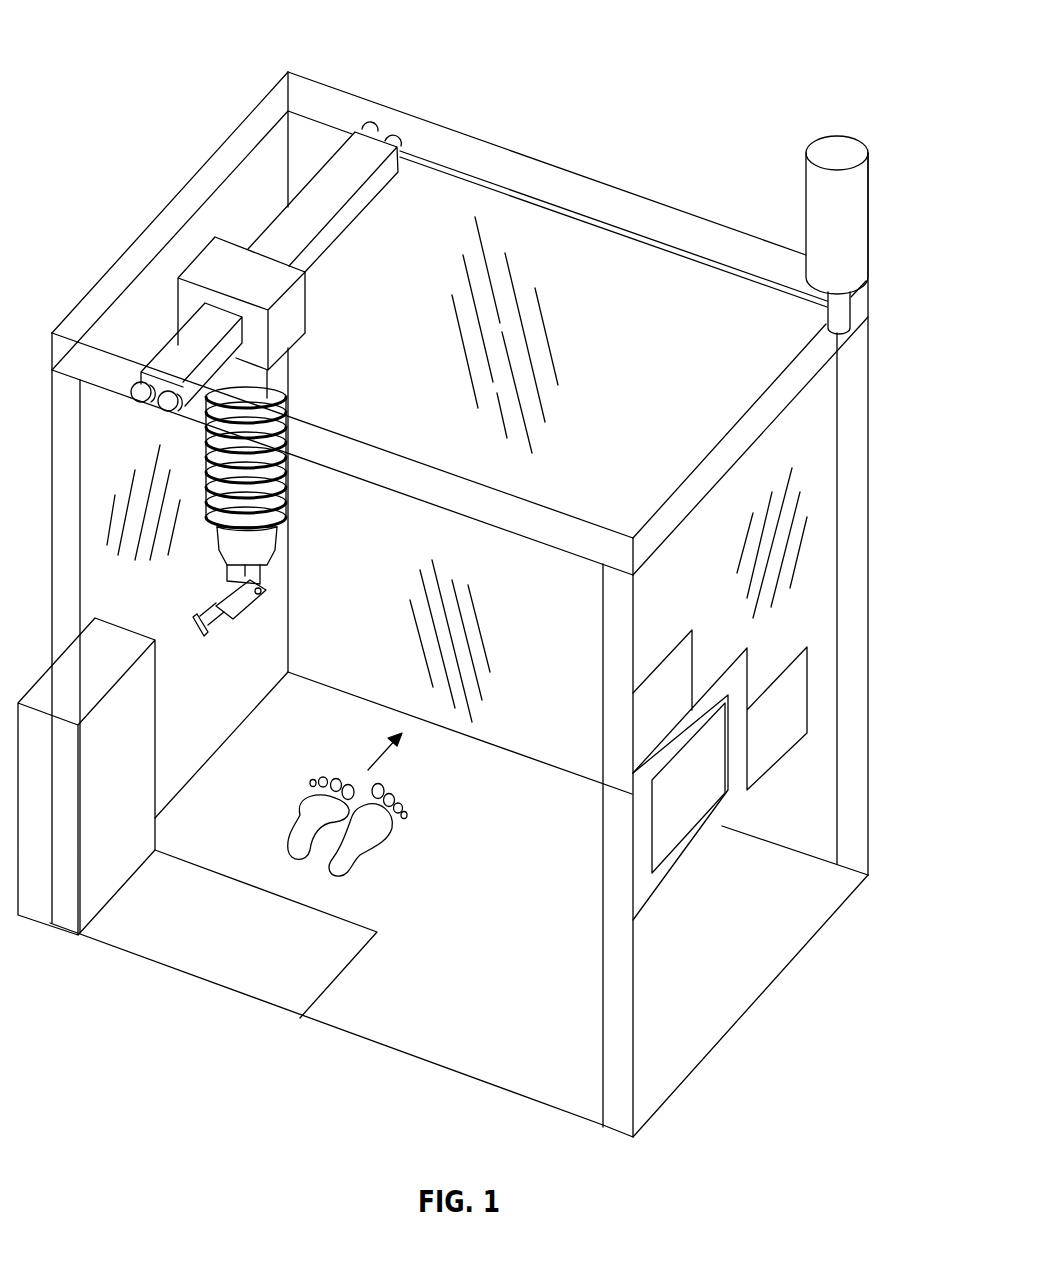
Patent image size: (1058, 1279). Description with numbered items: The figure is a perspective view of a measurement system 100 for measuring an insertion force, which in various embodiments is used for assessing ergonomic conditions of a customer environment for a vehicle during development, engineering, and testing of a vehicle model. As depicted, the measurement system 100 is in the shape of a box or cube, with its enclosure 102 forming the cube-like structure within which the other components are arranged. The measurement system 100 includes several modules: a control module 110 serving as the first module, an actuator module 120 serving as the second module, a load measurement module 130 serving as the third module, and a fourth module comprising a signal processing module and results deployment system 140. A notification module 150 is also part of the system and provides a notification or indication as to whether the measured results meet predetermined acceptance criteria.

The measurement system 100 is at (126, 47).
The enclosure 102 is at (65, 580).
The control module 110 is at (237, 224).
The actuator module 120 is at (288, 488).
The load measurement module 130 is at (267, 593).
The signal processing module and results deployment system 140 is at (789, 626).
The notification module 150 is at (806, 187).